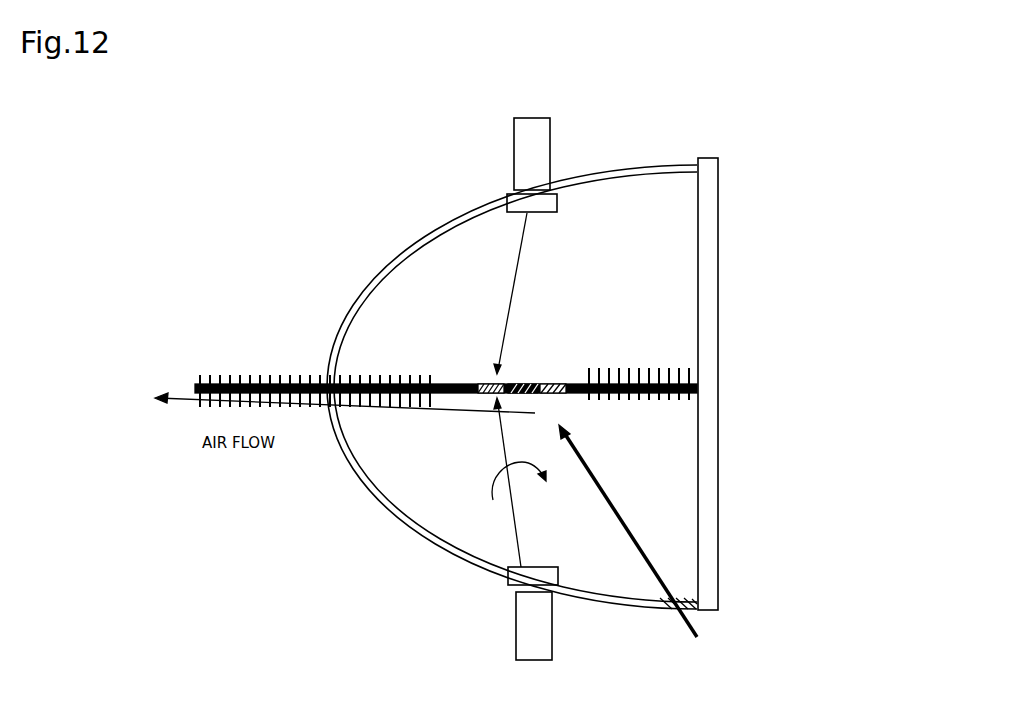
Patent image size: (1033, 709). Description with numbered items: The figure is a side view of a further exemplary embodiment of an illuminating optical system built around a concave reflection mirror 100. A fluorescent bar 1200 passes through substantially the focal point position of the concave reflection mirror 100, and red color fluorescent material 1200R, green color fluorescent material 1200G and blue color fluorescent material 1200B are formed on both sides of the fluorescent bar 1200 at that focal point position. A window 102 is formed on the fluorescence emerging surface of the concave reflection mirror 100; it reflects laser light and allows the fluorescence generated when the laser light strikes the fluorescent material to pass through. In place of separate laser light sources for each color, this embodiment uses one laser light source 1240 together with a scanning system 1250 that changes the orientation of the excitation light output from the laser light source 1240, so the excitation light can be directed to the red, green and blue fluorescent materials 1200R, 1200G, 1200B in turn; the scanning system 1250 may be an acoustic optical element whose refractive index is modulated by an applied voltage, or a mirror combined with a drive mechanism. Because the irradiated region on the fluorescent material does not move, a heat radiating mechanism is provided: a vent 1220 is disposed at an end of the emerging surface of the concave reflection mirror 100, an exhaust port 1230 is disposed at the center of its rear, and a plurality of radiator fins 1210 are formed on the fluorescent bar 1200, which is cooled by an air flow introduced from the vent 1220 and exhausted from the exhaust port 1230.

The concave reflection mirror 100 is at (667, 157).
The window 102 is at (710, 247).
The fluorescent bar 1200 is at (195, 388).
The red color fluorescent material 1200R is at (483, 383).
The green color fluorescent material 1200G is at (525, 382).
The blue color fluorescent material 1200B is at (558, 397).
The radiator fins 1210 is at (245, 367).
The vent 1220 is at (670, 610).
The exhaust port 1230 is at (323, 380).
The laser light source 1240 is at (514, 143).
The scanning system 1250 is at (500, 198).